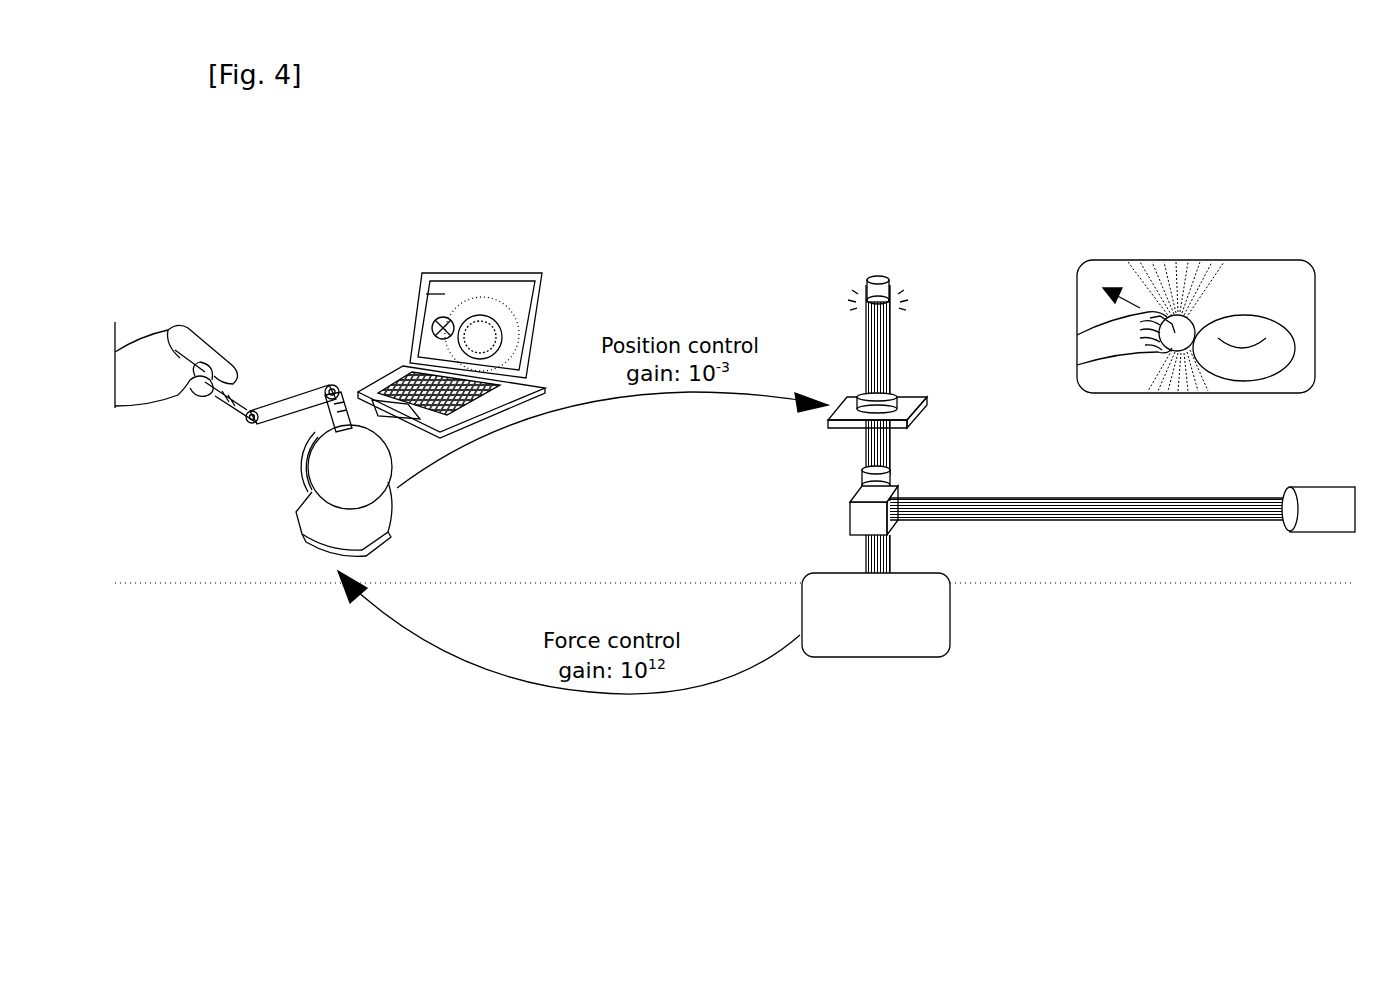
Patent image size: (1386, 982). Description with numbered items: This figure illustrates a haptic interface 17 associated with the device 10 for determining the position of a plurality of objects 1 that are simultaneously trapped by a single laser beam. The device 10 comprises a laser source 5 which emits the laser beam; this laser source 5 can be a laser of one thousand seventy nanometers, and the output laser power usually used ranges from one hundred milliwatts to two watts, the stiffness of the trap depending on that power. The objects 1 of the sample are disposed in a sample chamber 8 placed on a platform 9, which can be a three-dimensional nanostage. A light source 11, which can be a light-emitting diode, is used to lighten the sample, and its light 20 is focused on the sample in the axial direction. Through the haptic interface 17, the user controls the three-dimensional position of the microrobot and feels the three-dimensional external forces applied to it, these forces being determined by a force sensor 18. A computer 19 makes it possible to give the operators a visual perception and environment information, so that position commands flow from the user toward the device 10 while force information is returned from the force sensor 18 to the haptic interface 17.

The objects 1 is at (1186, 322).
The laser source 5 is at (1323, 520).
The sample chamber 8 is at (893, 395).
The platform 9 is at (924, 408).
The device 10 is at (1023, 226).
The light source 11 is at (881, 272).
The haptic interface 17 is at (278, 458).
The force sensor 18 is at (870, 659).
The computer 19 is at (393, 314).
The light 20 is at (892, 545).